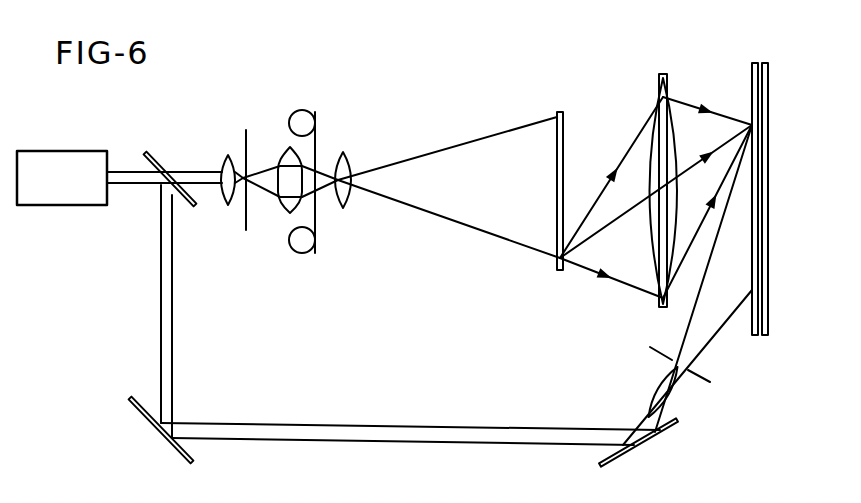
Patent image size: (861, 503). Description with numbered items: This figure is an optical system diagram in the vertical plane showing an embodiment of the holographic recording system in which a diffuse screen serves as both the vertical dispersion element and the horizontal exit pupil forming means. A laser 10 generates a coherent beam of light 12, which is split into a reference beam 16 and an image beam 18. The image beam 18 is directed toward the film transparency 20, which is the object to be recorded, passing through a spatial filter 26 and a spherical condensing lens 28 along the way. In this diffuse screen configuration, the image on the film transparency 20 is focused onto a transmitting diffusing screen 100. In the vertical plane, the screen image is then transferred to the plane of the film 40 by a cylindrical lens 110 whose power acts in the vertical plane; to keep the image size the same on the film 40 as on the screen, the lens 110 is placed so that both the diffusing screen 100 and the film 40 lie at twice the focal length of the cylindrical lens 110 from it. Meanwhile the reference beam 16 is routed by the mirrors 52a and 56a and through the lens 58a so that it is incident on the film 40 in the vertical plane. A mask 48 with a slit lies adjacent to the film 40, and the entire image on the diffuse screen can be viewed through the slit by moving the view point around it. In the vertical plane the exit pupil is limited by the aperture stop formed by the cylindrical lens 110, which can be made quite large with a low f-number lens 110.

The laser 10 is at (74, 170).
The coherent beam of light 12 is at (132, 184).
The reference beam 16 is at (177, 263).
The image beam 18 is at (198, 178).
The transparency 20 is at (316, 156).
The spatial filter 26 is at (215, 203).
The spherical condensing lens 28 is at (288, 155).
The film 40 is at (769, 90).
The mask 48 is at (751, 72).
The beam-steering mirror 52a is at (172, 447).
The reference beam mirror 56a is at (660, 433).
The reference beam lens 58a is at (714, 376).
The transmitting diffusing screen 100 is at (518, 148).
The cylindrical lens 110 is at (658, 98).